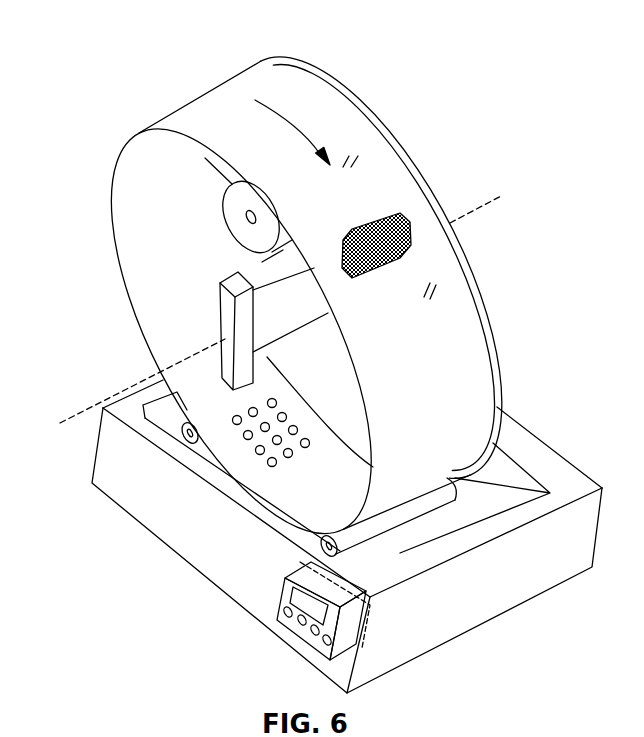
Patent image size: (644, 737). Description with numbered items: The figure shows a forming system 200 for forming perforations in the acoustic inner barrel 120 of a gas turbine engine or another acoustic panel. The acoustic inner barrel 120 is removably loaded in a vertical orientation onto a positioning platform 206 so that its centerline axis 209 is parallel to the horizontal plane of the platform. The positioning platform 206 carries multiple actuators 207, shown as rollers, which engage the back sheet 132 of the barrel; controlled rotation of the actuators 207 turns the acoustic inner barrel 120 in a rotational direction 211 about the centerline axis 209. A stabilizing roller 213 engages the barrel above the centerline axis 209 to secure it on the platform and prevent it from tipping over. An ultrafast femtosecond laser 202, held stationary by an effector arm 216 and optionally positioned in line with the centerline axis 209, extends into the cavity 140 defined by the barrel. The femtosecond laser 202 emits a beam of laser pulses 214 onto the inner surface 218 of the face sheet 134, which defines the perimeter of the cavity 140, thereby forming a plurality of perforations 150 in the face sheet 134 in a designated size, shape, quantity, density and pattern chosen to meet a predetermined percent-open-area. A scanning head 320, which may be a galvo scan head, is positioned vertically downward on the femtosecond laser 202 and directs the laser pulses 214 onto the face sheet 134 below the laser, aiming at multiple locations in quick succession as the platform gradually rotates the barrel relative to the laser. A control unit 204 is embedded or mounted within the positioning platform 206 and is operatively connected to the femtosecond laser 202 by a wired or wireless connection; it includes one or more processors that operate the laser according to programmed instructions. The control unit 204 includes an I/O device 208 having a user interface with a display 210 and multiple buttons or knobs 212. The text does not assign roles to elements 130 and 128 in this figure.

The forming system 200 is at (118, 89).
The acoustic inner barrel 120 is at (124, 178).
The cavity 140 is at (153, 244).
The stabilizing roller 213 is at (230, 188).
The rotational direction 211 is at (295, 118).
The back sheet 132 is at (347, 150).
The grille 130 is at (392, 218).
The centerline axis 209 is at (488, 200).
The drum wall 128 is at (410, 243).
The inner surface 218 is at (150, 303).
The femtosecond laser 202 is at (222, 295).
The scanning head 320 is at (222, 383).
The laser pulses 214 is at (237, 415).
The positioning platform 206 is at (117, 412).
The effector arm 216 is at (310, 296).
The actuators 207 is at (188, 431).
The perforations 150 is at (266, 470).
The face sheet 134 is at (325, 495).
The control unit 204 is at (300, 562).
The display 210 is at (332, 620).
The I/O device 208 is at (290, 585).
The buttons or knobs 212 is at (327, 640).